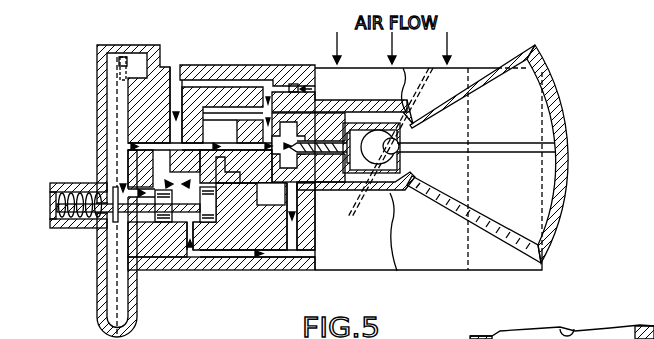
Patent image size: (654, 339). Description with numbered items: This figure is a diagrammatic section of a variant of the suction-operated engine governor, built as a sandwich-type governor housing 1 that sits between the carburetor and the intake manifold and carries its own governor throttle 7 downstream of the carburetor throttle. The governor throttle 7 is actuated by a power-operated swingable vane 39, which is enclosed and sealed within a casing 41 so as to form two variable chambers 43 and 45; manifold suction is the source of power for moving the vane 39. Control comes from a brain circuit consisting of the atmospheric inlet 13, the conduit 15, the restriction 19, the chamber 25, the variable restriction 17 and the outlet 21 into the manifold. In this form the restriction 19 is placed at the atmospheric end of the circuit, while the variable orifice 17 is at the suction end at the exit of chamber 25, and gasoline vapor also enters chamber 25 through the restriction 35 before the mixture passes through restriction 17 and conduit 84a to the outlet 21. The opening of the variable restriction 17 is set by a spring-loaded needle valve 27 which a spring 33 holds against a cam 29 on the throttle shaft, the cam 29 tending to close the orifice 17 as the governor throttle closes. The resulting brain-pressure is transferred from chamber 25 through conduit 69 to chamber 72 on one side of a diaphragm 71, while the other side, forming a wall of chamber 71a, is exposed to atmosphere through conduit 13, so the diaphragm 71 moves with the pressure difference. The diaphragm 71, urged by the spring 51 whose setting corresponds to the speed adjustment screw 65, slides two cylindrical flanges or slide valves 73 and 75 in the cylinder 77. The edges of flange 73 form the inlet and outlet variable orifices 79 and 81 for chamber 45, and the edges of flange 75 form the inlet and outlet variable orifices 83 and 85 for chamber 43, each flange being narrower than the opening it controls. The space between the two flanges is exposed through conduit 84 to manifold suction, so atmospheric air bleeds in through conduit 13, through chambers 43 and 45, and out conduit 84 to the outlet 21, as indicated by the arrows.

The governor housing 1 is at (543, 264).
The governor throttle 7 is at (428, 67).
The atmospheric inlet 13 is at (176, 63).
The conduit 15 is at (192, 143).
The variable restriction 17 is at (310, 141).
The restriction 19 is at (252, 140).
The outlet 21 is at (316, 256).
The chamber 25 is at (268, 157).
The needle valve 27 is at (326, 140).
The cam 29 is at (366, 186).
The spring 33 is at (364, 136).
The restriction 35 is at (293, 84).
The swingable vane 39 is at (538, 144).
The casing 41 is at (542, 70).
The variable chamber 43 is at (527, 110).
The variable chamber 45 is at (527, 185).
The spring 51 is at (83, 226).
The speed adjustment screw 65 is at (52, 214).
The conduit 69 is at (206, 78).
The diaphragm 71 is at (118, 148).
The chamber 71a is at (123, 93).
The chamber 72 is at (113, 118).
The slide valve 73 is at (168, 220).
The slide valve 75 is at (214, 219).
The cylinder 77 is at (146, 220).
The inlet variable orifice 79 is at (157, 165).
The outlet variable orifice 81 is at (186, 175).
The inlet variable orifice 83 is at (214, 195).
The conduit 84 is at (253, 268).
The conduit 84a is at (294, 233).
The outlet variable orifice 85 is at (203, 185).